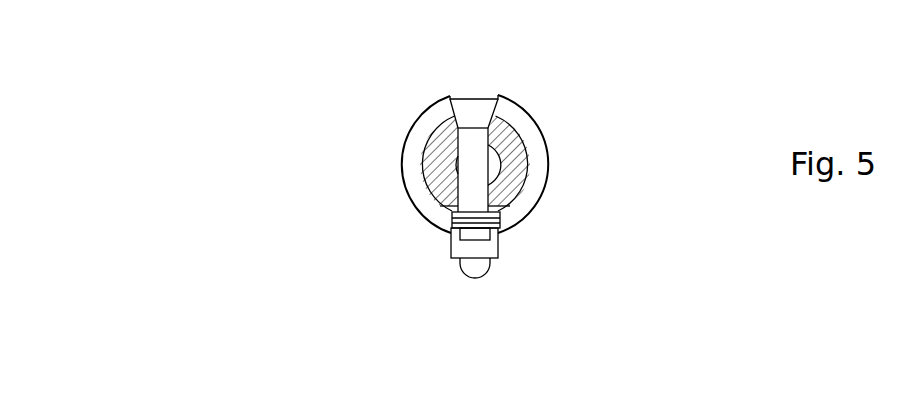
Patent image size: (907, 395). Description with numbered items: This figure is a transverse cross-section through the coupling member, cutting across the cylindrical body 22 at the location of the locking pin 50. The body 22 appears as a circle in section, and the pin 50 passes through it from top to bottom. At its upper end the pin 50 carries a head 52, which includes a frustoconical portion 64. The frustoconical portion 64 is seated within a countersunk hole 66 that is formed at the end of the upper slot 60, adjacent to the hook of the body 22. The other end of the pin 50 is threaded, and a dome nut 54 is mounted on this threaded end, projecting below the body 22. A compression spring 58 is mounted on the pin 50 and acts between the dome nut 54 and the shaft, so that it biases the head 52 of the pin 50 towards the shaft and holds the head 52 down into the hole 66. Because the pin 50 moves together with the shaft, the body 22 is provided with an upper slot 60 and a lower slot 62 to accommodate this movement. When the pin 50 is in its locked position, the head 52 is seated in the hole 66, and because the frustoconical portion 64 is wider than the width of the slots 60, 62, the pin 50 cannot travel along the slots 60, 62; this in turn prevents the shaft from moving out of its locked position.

The cylindrical body 22 is at (404, 172).
The locking pin 50 is at (486, 168).
The head 52 is at (485, 101).
The dome nut 54 is at (497, 278).
The compression spring 58 is at (509, 224).
The upper slot 60 is at (443, 135).
The lower slot 62 is at (448, 207).
The frustoconical portion 64 is at (462, 104).
The countersunk hole 66 is at (504, 132).